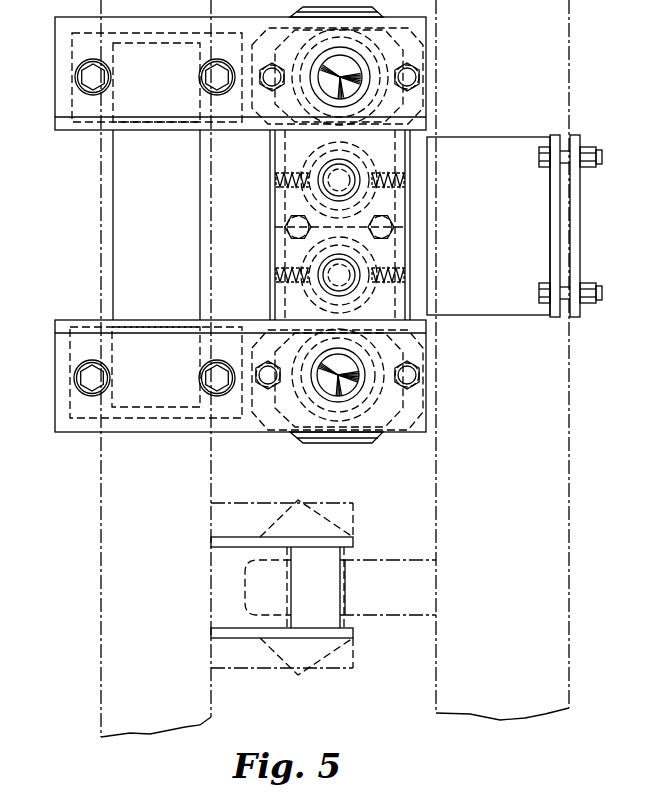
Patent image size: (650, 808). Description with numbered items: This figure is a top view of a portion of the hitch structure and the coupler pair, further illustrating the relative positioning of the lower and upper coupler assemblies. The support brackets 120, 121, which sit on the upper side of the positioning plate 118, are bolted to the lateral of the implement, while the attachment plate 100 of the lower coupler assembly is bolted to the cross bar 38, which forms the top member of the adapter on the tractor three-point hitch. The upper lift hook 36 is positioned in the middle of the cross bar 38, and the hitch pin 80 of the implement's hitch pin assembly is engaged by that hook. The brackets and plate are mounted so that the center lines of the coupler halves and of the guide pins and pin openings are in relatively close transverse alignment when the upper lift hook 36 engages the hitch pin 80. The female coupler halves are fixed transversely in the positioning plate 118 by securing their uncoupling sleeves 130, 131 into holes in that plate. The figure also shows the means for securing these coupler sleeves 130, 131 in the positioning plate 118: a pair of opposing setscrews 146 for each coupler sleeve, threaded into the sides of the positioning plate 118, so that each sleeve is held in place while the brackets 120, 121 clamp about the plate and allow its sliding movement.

The upper lift hook 36 is at (413, 558).
The cross bar 38 is at (570, 366).
The hitch pin 80 is at (326, 557).
The attachment plate 100 is at (545, 106).
The positioning plate 118 is at (352, 441).
The support bracket 120 is at (80, 131).
The support bracket 121 is at (76, 320).
The uncoupling sleeve 130 is at (412, 157).
The uncoupling sleeve 131 is at (412, 253).
The setscrews 146 is at (272, 200).